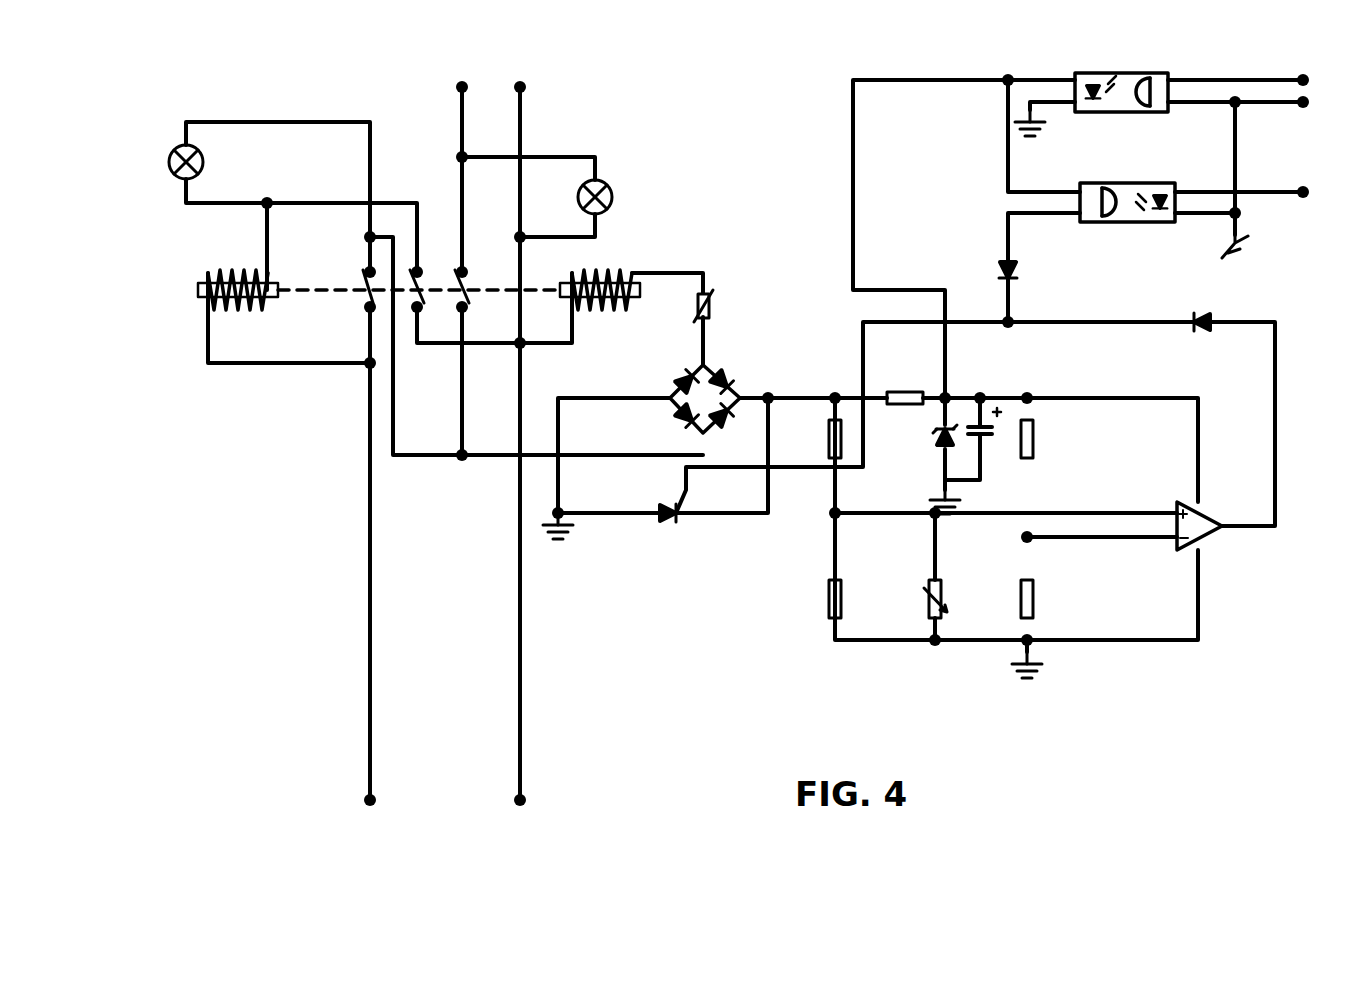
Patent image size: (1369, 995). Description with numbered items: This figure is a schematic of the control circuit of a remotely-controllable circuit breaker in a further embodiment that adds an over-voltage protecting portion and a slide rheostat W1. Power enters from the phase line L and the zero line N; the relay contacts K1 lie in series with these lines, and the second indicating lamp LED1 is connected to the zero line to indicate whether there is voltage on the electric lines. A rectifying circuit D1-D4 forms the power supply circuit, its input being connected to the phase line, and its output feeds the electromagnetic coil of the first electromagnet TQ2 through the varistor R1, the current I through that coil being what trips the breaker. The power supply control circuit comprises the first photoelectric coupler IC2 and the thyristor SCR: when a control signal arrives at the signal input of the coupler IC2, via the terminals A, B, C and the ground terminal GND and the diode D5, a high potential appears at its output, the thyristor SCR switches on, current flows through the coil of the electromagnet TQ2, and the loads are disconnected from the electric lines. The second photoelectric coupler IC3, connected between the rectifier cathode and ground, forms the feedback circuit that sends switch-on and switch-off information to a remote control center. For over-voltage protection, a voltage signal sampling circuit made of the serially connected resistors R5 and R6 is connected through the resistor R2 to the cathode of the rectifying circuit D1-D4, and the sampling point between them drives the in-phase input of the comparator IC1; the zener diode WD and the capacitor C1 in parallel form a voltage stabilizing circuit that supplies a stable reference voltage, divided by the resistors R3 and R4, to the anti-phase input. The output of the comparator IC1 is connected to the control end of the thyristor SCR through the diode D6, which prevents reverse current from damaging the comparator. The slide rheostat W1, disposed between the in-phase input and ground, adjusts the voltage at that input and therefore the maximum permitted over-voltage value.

The line terminal L is at (395, 437).
The neutral terminal N is at (536, 445).
The relay K1 is at (353, 278).
The second indicating lamp LED1 is at (636, 197).
The first electromagnet TQ2 is at (600, 308).
The varistor R1 is at (726, 306).
The current I is at (690, 332).
The rectifying circuit D1-D4 is at (668, 399).
The thyristor SCR is at (674, 535).
The resistor R2 is at (904, 383).
The resistor of the voltage signal sampling circuit R5 is at (818, 439).
The zener diode WD is at (920, 440).
The capacitor C1 is at (994, 440).
The resistor R3 is at (1047, 439).
The resistor of the voltage signal sampling circuit R6 is at (855, 599).
The slide rheostat W1 is at (959, 599).
The resistor R4 is at (1047, 599).
The comparator IC1 is at (1209, 526).
The first photoelectric coupler IC2 is at (1131, 219).
The second photoelectric coupler IC3 is at (1122, 105).
The diode D5 is at (1030, 275).
The diode D6 is at (1202, 308).
The terminal A is at (1311, 81).
The terminal B is at (1310, 113).
The terminal C is at (1311, 193).
The ground terminal GND is at (1266, 252).